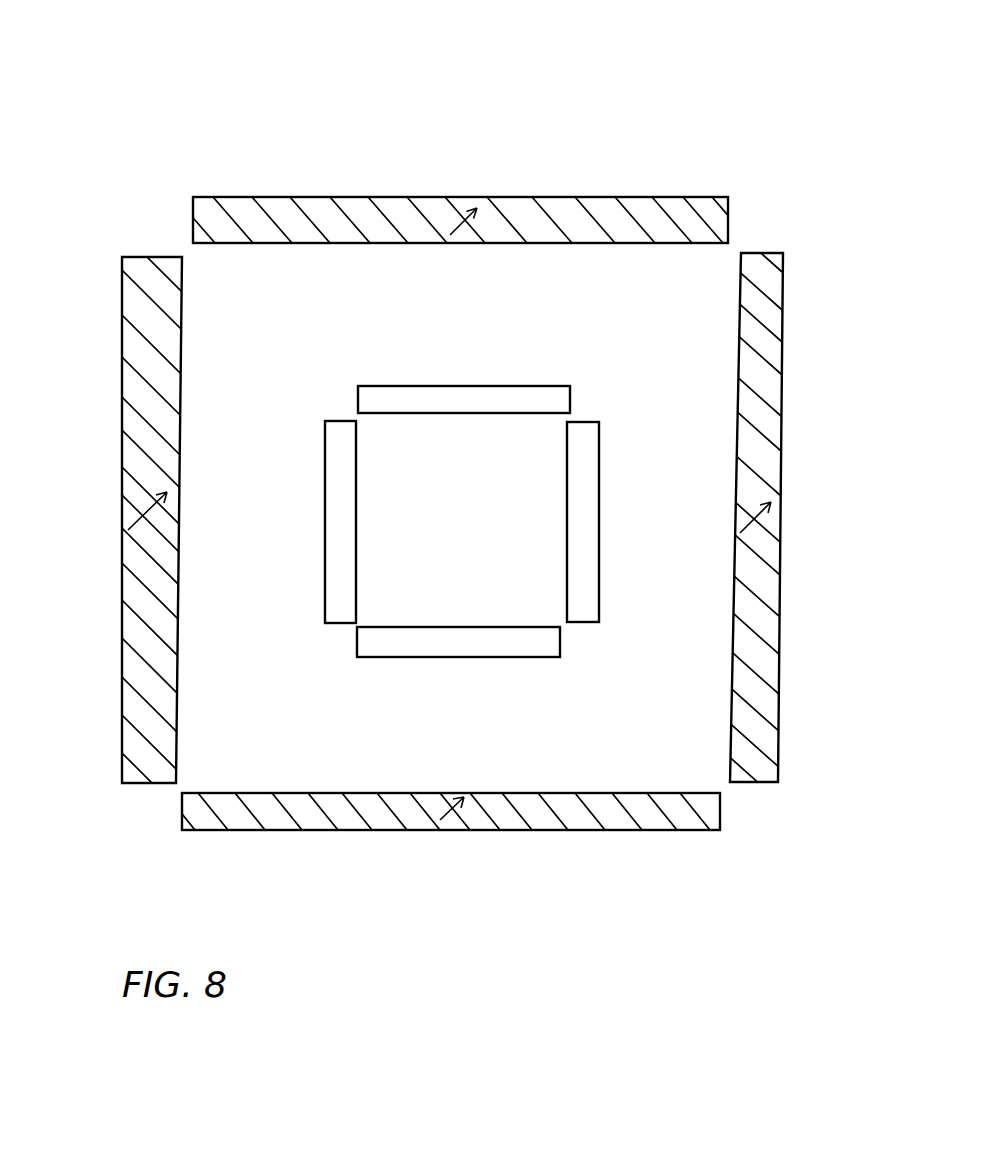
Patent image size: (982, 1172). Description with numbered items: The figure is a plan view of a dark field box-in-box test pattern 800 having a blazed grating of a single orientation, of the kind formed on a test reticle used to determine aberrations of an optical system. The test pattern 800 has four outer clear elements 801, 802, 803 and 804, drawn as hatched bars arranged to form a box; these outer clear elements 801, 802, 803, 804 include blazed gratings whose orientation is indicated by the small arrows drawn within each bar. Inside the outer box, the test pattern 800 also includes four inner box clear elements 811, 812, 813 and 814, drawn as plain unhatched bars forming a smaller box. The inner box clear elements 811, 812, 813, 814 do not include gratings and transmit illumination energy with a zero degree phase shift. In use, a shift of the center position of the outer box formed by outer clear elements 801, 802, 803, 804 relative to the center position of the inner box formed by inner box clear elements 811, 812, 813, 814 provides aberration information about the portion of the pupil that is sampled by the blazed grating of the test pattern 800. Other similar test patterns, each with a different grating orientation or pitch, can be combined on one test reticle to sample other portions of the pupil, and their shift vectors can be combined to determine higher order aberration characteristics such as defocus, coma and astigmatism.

The dark field box-in-box test pattern 800 is at (713, 90).
The outer clear element 801 is at (288, 228).
The outer clear element 802 is at (753, 659).
The outer clear element 803 is at (310, 817).
The outer clear element 804 is at (143, 598).
The inner box clear element 811 is at (472, 395).
The inner box clear element 812 is at (583, 562).
The inner box clear element 813 is at (443, 643).
The inner box clear element 814 is at (335, 468).